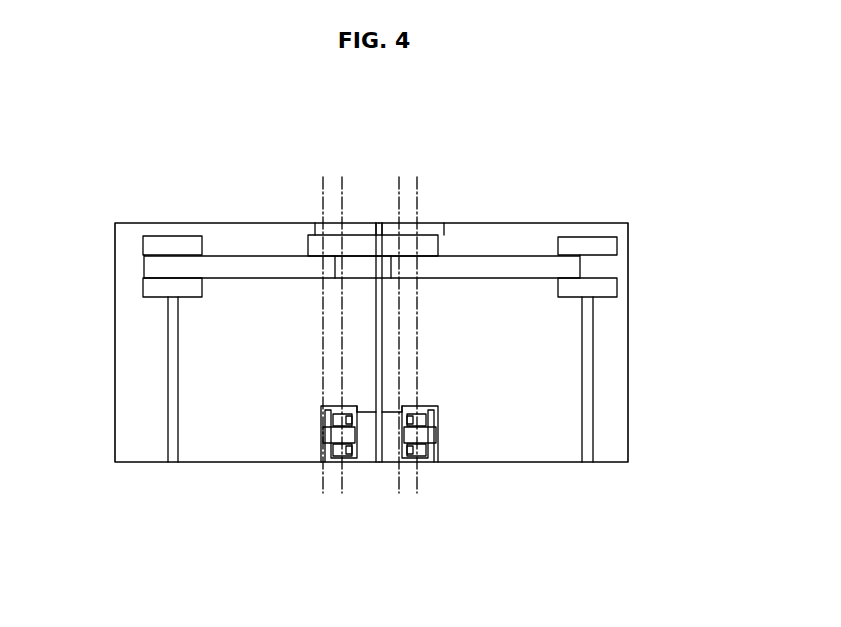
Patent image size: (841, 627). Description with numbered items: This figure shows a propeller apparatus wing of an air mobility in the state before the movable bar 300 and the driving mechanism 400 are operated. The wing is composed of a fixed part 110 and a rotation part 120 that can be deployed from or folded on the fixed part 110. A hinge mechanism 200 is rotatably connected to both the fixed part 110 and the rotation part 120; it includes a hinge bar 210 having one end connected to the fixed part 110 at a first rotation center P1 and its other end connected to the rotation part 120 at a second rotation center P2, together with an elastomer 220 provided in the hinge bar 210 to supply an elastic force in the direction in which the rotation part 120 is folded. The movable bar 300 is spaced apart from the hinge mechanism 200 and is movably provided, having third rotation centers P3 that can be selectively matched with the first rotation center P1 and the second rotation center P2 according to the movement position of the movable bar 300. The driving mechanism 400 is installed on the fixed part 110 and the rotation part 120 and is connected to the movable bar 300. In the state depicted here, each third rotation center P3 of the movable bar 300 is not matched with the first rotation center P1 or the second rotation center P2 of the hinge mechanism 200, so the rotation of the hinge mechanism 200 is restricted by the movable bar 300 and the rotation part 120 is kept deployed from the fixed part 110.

The fixed part 110 is at (245, 447).
The rotation part 120 is at (527, 447).
The hinge mechanism 200 is at (358, 462).
The hinge bar 210 is at (368, 447).
The elastomer 220 is at (440, 445).
The movable bar 300 is at (362, 243).
The driving mechanism 400 is at (172, 238).
The first rotation center P1 is at (347, 190).
The second rotation center P2 is at (420, 190).
The third rotation center P3 is at (318, 190).